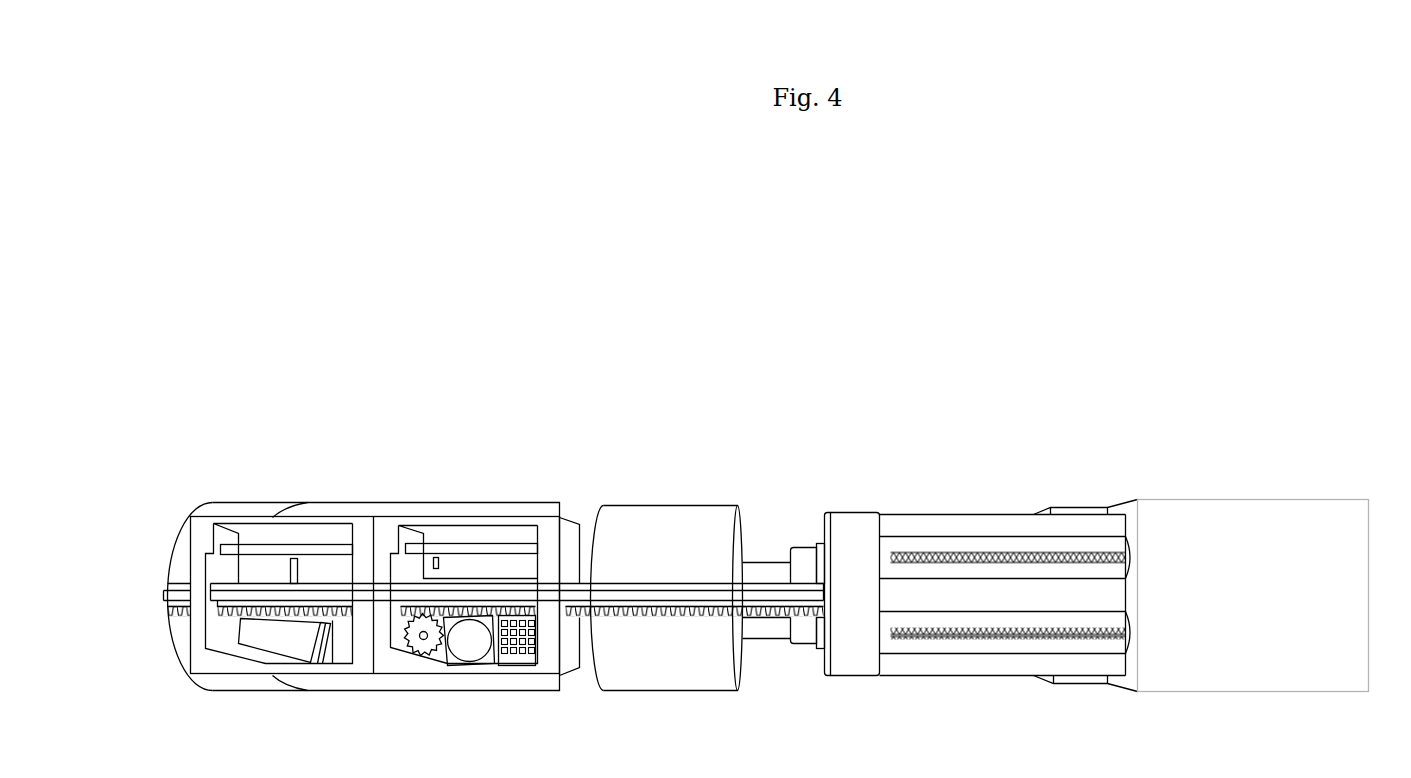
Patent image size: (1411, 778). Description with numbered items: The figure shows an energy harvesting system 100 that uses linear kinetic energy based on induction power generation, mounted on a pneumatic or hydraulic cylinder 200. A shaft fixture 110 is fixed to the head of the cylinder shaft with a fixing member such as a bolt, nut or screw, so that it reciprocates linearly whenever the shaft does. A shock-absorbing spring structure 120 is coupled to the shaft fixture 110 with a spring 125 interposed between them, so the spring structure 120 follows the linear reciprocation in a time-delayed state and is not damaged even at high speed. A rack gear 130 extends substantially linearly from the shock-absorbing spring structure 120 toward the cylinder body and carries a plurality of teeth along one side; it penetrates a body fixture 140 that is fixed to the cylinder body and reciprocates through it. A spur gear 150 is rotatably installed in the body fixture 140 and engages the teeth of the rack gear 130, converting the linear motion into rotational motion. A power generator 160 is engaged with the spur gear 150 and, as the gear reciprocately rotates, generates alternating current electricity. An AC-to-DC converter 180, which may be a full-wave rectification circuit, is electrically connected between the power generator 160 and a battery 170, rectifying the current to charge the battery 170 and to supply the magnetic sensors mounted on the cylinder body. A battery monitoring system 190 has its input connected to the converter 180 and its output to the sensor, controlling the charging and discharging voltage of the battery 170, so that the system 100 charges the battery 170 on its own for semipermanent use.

The energy harvesting system 100 is at (1108, 368).
The shaft fixture 110 is at (1245, 512).
The shock-absorbing spring structure 120 is at (1003, 527).
The spring 125 is at (932, 552).
The rack gear 130 is at (692, 587).
The body fixture 140 is at (225, 655).
The spur gear 150 is at (427, 647).
The power generator 160 is at (472, 647).
The battery 170 is at (500, 538).
The AC-to-DC converter 180 is at (525, 650).
The battery monitoring system 190 is at (448, 562).
The pneumatic cylinder 200 is at (697, 645).